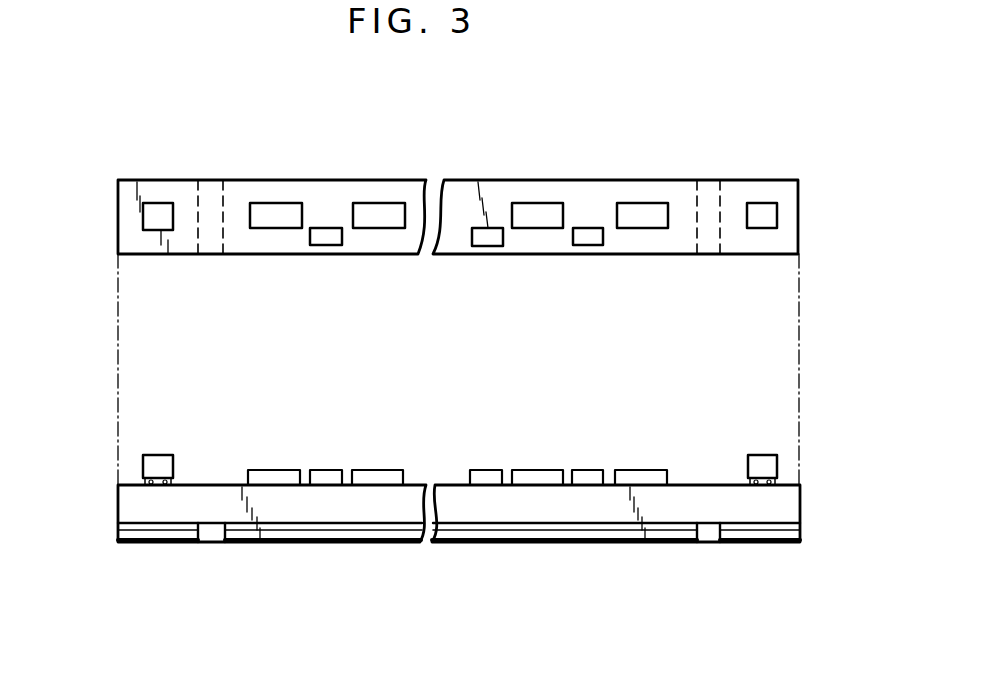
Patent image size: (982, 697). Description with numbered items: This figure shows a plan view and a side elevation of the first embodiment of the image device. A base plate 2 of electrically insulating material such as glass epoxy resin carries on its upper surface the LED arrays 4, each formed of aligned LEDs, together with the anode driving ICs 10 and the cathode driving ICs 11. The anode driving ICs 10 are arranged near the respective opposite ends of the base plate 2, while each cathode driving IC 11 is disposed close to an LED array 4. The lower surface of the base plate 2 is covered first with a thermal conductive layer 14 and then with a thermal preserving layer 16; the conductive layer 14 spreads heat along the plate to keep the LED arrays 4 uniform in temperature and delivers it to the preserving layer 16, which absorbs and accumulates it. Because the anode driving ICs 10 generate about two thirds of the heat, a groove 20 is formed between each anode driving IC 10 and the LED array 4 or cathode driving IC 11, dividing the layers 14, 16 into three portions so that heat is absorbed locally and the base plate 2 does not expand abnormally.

The base plate 2 is at (790, 227).
The LED array 4 is at (277, 210).
The anode driving IC 10 is at (157, 212).
The cathode driving IC 11 is at (328, 244).
The thermal conductive layer 14 is at (785, 540).
The thermal preserving layer 16 is at (748, 544).
The groove 20 is at (208, 190).